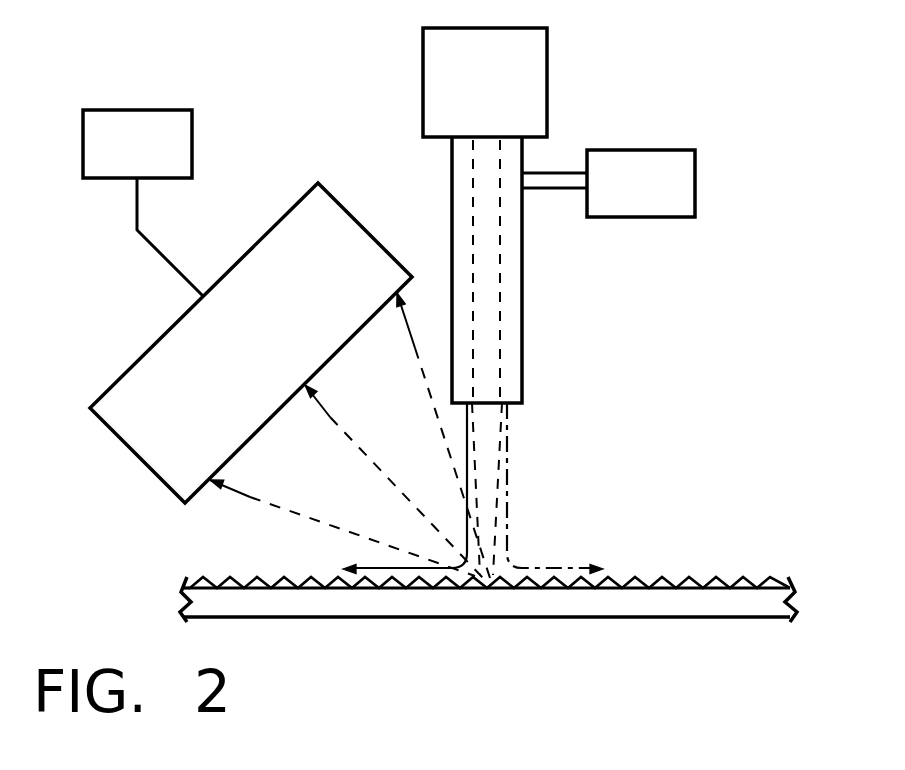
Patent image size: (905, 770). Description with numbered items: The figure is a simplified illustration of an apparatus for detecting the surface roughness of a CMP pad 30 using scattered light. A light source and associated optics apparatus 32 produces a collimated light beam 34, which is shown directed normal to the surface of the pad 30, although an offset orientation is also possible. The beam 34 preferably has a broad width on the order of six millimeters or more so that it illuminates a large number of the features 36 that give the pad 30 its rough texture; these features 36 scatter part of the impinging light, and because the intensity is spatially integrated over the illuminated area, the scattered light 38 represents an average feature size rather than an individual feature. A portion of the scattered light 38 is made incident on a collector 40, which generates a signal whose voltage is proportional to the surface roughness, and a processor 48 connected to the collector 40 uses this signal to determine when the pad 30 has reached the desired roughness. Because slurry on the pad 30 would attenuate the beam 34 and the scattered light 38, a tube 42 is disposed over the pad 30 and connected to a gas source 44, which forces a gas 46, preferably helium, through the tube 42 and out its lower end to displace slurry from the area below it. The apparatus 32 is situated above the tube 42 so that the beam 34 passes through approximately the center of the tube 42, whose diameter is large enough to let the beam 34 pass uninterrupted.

The CMP pad 30 is at (684, 605).
The light source and associated optics apparatus 32 is at (423, 39).
The collimated light beam 34 is at (500, 374).
The features 36 is at (704, 578).
The scattered light 38 is at (433, 393).
The collector 40 is at (305, 196).
The tube 42 is at (522, 262).
The gas source 44 is at (666, 150).
The gas 46 is at (582, 567).
The processor 48 is at (150, 110).